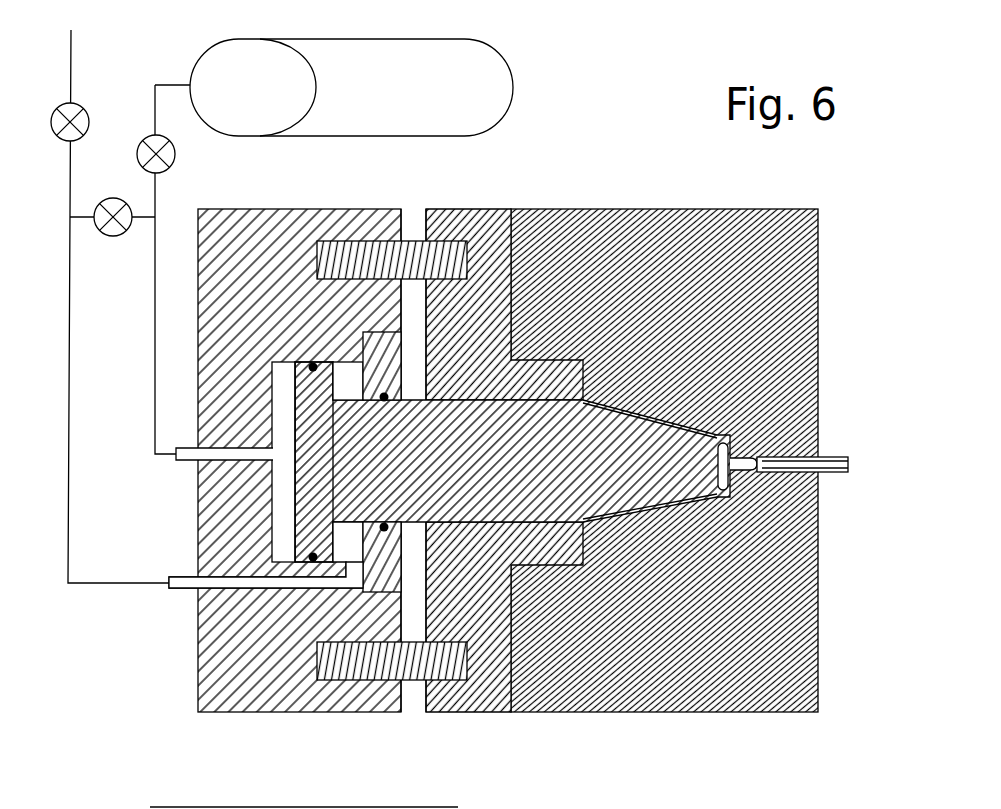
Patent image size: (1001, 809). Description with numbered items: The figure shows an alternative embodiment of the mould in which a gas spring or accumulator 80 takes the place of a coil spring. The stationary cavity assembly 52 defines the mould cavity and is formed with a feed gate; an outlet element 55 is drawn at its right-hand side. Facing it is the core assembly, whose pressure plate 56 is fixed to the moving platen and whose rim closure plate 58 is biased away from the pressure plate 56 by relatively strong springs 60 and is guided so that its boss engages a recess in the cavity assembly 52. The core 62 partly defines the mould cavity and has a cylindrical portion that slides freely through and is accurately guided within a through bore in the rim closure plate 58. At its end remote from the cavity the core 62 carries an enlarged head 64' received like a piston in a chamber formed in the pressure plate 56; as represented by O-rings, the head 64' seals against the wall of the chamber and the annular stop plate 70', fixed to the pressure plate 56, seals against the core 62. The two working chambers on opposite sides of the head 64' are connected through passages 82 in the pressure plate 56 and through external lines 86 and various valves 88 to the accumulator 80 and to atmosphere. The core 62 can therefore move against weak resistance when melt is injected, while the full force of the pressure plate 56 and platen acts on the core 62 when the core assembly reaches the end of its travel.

The cavity assembly 52 is at (595, 262).
The outlet tube 55 is at (790, 468).
The pressure plate 56 is at (307, 228).
The rim closure plate 58 is at (498, 235).
The springs 60 is at (408, 680).
The core 62 is at (535, 483).
The head 64' is at (271, 361).
The stop plate 70' is at (266, 530).
The accumulator 80 is at (452, 72).
The passages 82 is at (198, 457).
The external lines 86 is at (72, 315).
The valves 88 is at (115, 202).